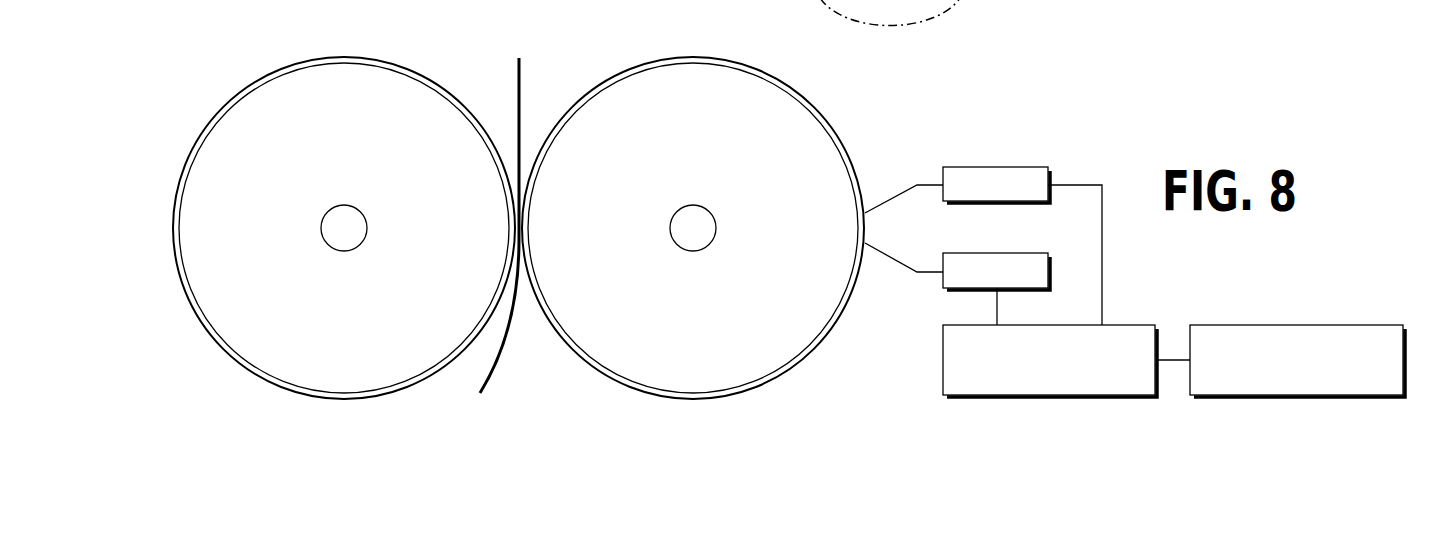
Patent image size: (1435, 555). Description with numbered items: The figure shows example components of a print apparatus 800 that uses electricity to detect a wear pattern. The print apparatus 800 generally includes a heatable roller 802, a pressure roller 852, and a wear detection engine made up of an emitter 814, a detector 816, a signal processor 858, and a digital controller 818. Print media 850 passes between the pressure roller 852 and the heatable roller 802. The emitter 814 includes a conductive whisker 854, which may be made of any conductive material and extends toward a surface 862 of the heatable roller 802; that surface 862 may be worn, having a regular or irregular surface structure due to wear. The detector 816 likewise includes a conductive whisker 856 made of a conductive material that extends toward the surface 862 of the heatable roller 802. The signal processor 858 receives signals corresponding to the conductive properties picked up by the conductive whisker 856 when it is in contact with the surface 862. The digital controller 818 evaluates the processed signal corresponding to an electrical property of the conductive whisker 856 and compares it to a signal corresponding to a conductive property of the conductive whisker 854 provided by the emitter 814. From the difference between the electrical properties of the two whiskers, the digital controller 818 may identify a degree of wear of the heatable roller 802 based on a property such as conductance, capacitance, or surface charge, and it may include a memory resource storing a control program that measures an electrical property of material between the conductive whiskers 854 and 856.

The print apparatus 800 is at (160, 116).
The heatable roller 802 is at (704, 228).
The pressure roller 852 is at (363, 160).
The print media 850 is at (518, 82).
The surface 862 is at (803, 97).
The conductive whisker 856 is at (889, 200).
The conductive whisker 854 is at (890, 258).
The detector 816 is at (997, 167).
The emitter 814 is at (1003, 253).
The signal processor 858 is at (943, 359).
The digital controller 818 is at (1298, 325).